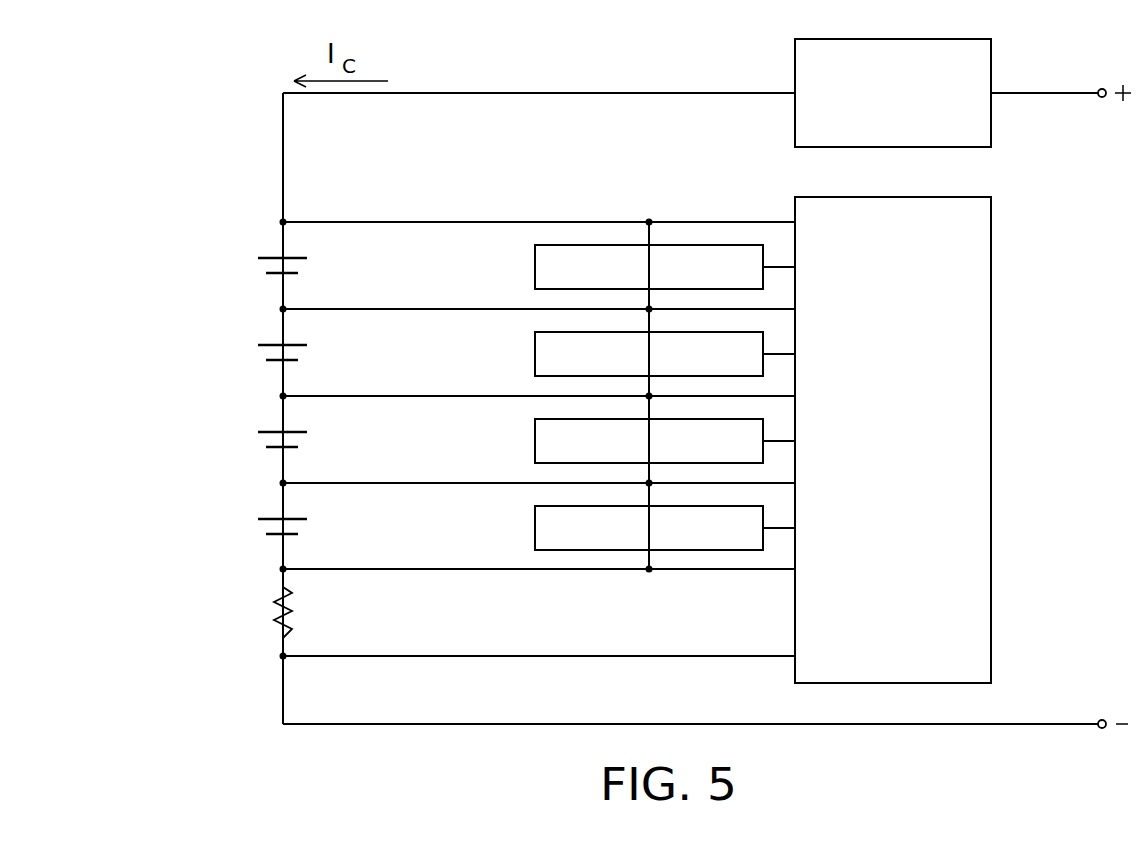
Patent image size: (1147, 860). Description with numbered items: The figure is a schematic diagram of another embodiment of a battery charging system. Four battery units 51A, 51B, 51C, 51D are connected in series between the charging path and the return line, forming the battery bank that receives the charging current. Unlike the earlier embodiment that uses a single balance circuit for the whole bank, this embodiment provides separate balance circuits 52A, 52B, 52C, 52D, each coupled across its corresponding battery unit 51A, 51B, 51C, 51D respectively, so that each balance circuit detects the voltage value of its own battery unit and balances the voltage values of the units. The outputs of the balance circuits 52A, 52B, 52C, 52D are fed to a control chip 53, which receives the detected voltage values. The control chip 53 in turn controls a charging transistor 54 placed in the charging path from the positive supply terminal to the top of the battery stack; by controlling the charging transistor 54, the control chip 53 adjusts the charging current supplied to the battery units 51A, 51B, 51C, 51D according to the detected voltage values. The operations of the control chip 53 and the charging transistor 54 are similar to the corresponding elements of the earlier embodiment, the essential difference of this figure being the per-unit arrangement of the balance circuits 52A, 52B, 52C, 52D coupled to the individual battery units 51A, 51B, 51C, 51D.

The battery unit 51A is at (271, 269).
The battery unit 51B is at (271, 356).
The battery unit 51C is at (271, 443).
The battery unit 51D is at (271, 530).
The balance circuit 52A is at (533, 268).
The balance circuit 52B is at (533, 355).
The balance circuit 52C is at (533, 442).
The balance circuit 52D is at (533, 529).
The control chip 53 is at (796, 197).
The charging transistor 54 is at (796, 39).